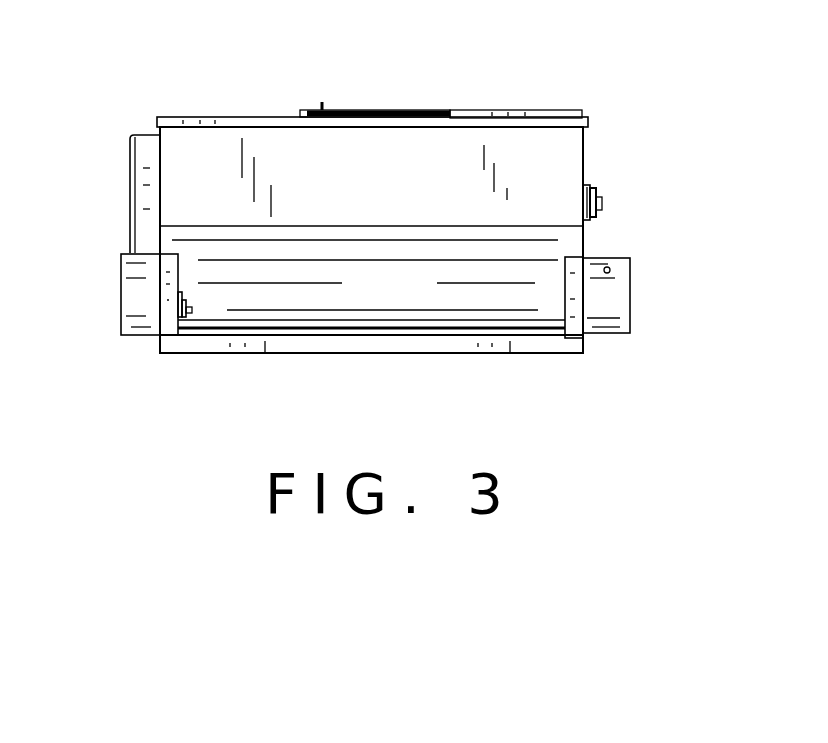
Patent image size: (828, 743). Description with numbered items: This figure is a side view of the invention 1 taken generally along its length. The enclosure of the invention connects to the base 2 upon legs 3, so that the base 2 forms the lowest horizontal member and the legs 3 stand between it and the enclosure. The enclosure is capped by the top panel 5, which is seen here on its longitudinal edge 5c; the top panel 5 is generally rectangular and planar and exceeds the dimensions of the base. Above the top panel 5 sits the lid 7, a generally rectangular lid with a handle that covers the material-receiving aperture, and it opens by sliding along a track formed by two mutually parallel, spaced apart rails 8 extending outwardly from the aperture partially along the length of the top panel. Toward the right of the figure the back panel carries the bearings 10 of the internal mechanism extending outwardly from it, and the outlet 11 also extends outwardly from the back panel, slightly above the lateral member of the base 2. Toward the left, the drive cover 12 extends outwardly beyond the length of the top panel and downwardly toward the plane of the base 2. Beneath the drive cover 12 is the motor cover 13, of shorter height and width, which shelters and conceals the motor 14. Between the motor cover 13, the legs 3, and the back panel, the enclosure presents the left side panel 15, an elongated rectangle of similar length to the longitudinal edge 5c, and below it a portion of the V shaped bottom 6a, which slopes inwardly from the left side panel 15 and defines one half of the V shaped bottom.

The invention 1 is at (106, 80).
The base 2 is at (456, 355).
The legs 3 is at (168, 317).
The top panel 5 is at (196, 107).
The longitudinal edge 5c is at (244, 123).
The portion of the V shaped bottom 6a is at (417, 297).
The lid 7 is at (365, 110).
The rails 8 is at (483, 117).
The bearings 10 is at (602, 203).
The outlet 11 is at (605, 302).
The drive cover 12 is at (150, 190).
The motor cover 13 is at (138, 302).
The motor 14 is at (192, 310).
The left side panel 15 is at (547, 180).